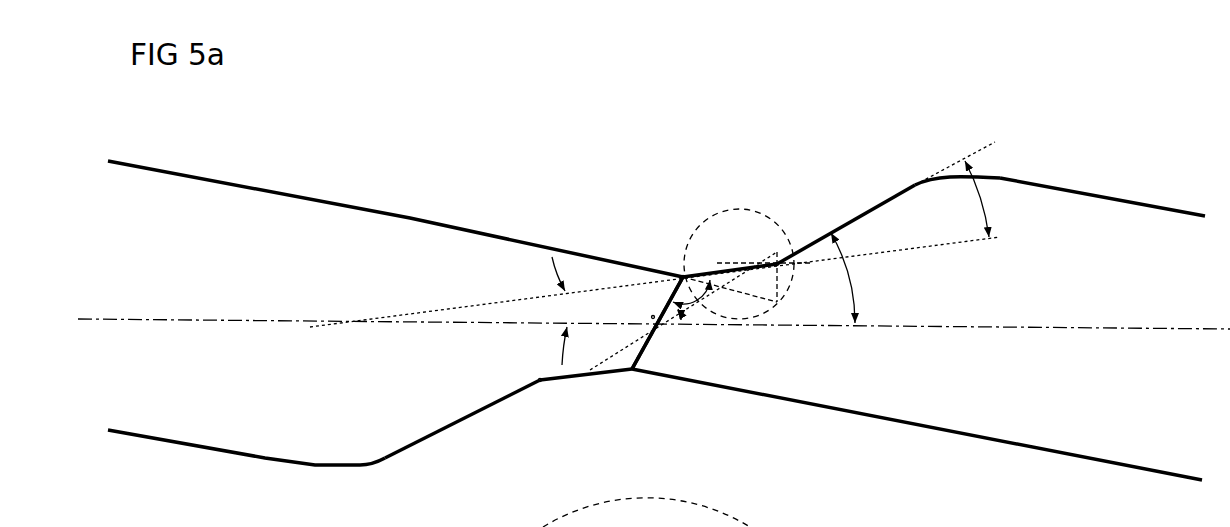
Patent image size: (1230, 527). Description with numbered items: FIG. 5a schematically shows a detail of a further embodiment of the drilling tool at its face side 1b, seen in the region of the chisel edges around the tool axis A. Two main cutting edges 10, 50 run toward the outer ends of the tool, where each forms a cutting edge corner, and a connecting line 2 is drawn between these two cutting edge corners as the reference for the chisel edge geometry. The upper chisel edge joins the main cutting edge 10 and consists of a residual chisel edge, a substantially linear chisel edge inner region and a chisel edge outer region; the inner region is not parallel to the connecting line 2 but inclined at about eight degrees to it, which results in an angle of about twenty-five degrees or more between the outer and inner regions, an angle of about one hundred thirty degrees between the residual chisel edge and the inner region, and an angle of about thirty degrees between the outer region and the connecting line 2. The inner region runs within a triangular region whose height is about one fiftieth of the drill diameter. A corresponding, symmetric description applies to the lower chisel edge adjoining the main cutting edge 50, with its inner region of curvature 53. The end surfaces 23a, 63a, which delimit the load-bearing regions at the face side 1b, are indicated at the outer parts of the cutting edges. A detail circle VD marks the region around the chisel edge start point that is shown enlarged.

The end surface 63a is at (220, 233).
The face side 1b is at (395, 196).
The main cutting edge 10 is at (1092, 190).
The connecting line 2 is at (1093, 328).
The detail circle VD is at (740, 208).
The tool axis A is at (653, 317).
The main cutting edge 50 is at (222, 452).
The inner region of curvature 53 is at (540, 387).
The end surface 23a is at (1097, 412).